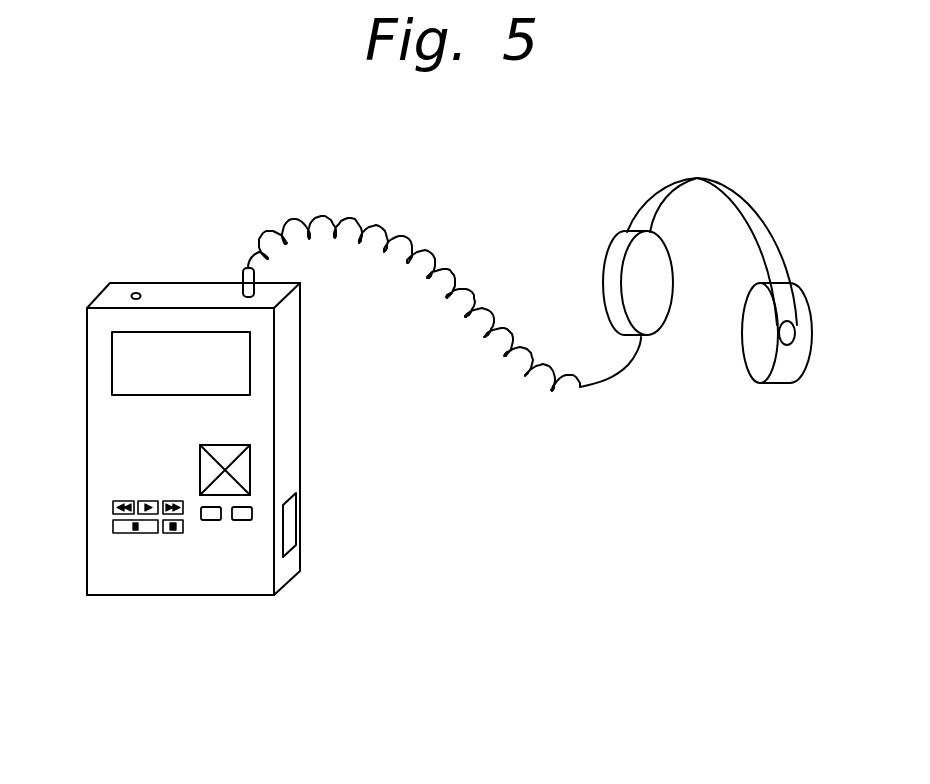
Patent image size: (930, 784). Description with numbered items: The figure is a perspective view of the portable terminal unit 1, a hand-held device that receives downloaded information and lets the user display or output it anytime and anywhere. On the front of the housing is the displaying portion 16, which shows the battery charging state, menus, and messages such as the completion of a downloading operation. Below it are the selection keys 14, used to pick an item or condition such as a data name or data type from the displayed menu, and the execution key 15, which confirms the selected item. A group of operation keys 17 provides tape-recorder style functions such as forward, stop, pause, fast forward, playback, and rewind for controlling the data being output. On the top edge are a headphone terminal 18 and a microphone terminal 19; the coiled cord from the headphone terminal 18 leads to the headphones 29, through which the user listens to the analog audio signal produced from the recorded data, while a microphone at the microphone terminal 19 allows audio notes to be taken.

The portable terminal unit 1 is at (190, 269).
The selection keys 14 is at (296, 520).
The execution key 15 is at (212, 521).
The displaying portion 16 is at (111, 365).
The operation keys 17 is at (120, 488).
The headphone terminal 18 is at (242, 289).
The microphone terminal 19 is at (131, 292).
The headphones 29 is at (810, 334).